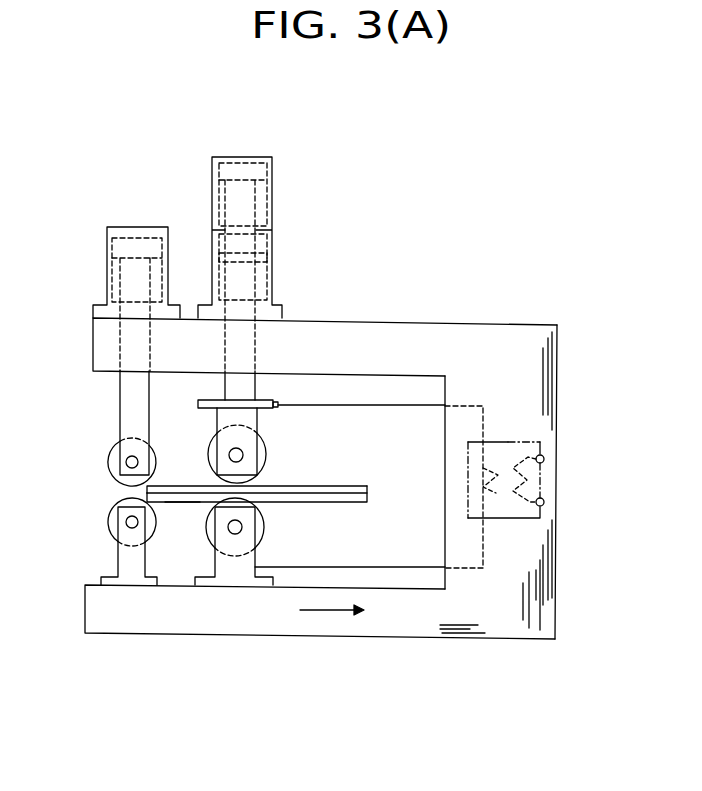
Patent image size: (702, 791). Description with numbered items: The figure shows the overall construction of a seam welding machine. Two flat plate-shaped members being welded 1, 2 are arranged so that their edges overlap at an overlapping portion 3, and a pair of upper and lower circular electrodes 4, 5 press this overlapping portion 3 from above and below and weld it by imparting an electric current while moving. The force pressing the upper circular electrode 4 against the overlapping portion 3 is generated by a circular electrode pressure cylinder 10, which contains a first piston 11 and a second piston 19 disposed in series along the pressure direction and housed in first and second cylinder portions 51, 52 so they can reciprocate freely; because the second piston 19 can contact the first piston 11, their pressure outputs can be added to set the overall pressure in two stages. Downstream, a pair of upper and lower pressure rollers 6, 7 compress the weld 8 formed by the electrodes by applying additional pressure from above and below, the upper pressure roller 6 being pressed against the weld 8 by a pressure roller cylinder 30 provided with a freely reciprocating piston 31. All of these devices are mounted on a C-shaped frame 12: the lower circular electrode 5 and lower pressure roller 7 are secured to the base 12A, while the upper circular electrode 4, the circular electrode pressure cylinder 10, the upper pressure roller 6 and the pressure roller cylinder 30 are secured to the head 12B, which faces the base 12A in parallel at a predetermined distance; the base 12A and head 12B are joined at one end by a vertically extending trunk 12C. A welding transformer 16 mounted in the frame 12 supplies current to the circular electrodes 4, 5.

The member being welded 1 is at (347, 503).
The member being welded 2 is at (347, 487).
The overlapping portion 3 is at (266, 496).
The upper circular electrode 4 is at (265, 447).
The lower circular electrode 5 is at (262, 537).
The upper pressure roller 6 is at (108, 452).
The lower pressure roller 7 is at (108, 530).
The weld 8 is at (182, 500).
The circular electrode pressure cylinder 10 is at (252, 249).
The first piston 11 is at (267, 250).
The C-shaped frame 12 is at (359, 476).
The base 12A is at (265, 635).
The head 12B is at (308, 328).
The trunk 12C is at (556, 555).
The welding transformer 16 is at (527, 442).
The second piston 19 is at (213, 167).
The pressure roller cylinder 30 is at (114, 271).
The piston 31 is at (132, 268).
The first cylinder portion 51 is at (212, 260).
The second cylinder portion 52 is at (212, 197).